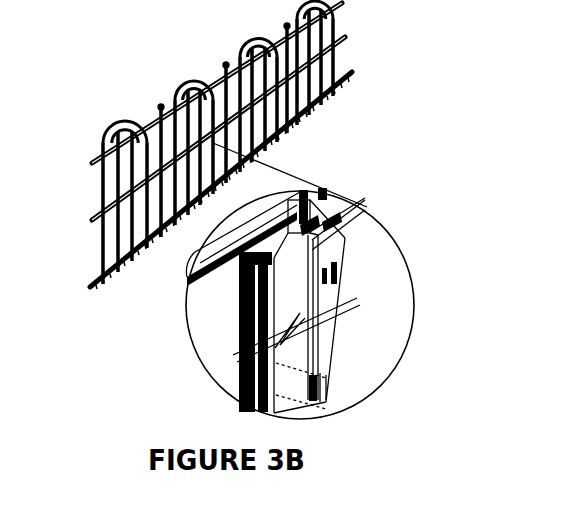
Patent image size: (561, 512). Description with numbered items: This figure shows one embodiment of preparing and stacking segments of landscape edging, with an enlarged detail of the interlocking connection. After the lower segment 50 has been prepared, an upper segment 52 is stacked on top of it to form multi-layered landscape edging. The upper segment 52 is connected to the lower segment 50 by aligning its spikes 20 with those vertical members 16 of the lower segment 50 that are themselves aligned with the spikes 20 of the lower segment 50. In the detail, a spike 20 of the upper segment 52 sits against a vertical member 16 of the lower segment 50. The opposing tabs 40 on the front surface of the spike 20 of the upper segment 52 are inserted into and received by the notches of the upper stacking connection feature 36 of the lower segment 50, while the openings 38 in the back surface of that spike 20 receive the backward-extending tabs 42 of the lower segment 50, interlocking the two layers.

The vertical member 16 is at (235, 357).
The spike 20 is at (328, 347).
The upper stacking connection feature 36 is at (231, 381).
The opening 38 is at (348, 277).
The tab 40 is at (338, 380).
The tab 42 is at (228, 290).
The lower segment 50 is at (192, 148).
The upper segment 52 is at (82, 191).